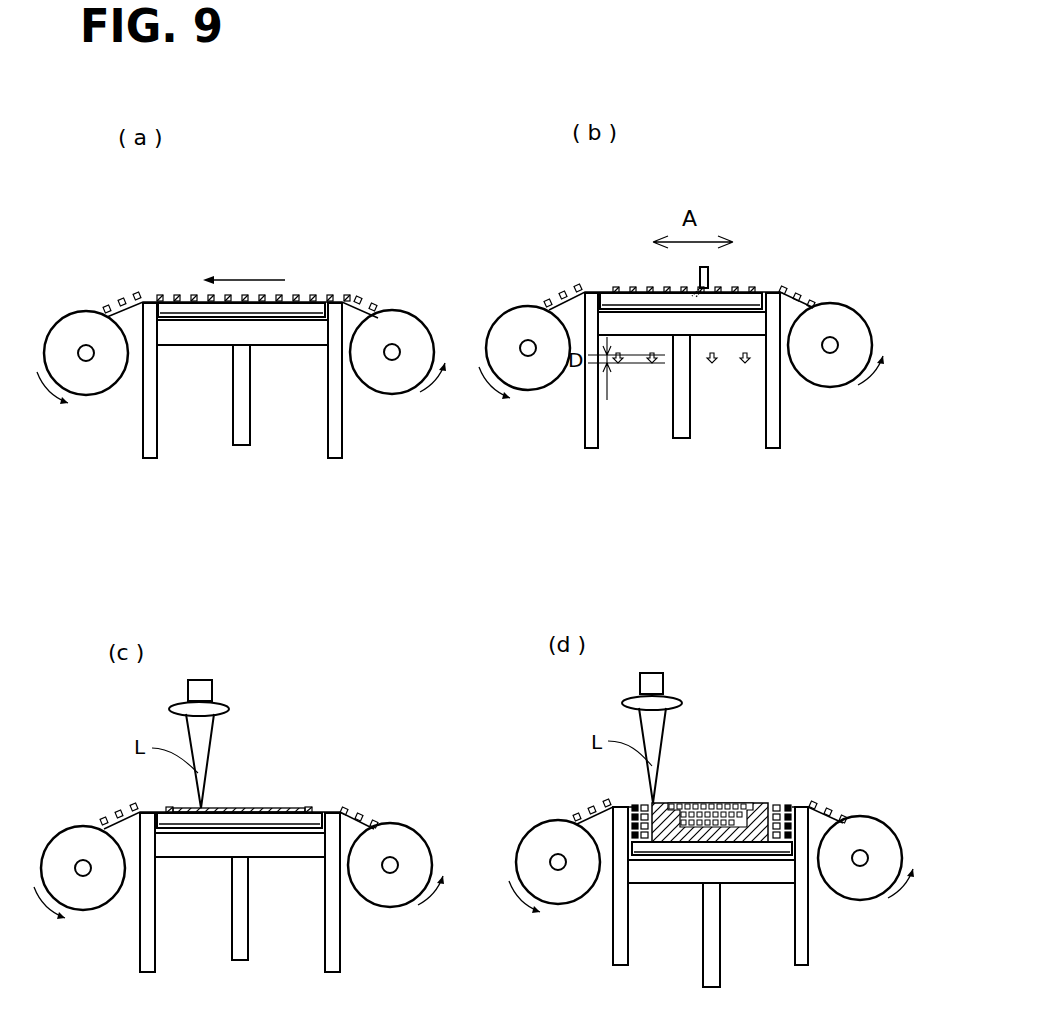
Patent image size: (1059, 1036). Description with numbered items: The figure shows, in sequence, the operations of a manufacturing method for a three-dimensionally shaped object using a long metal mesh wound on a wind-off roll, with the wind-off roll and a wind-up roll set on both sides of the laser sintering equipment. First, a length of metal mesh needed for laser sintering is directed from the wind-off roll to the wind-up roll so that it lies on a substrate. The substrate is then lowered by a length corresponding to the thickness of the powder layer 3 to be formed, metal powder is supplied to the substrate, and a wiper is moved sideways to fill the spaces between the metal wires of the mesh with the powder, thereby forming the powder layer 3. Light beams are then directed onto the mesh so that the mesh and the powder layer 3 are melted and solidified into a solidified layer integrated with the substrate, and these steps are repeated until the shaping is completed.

The powder layer 3 is at (740, 290).